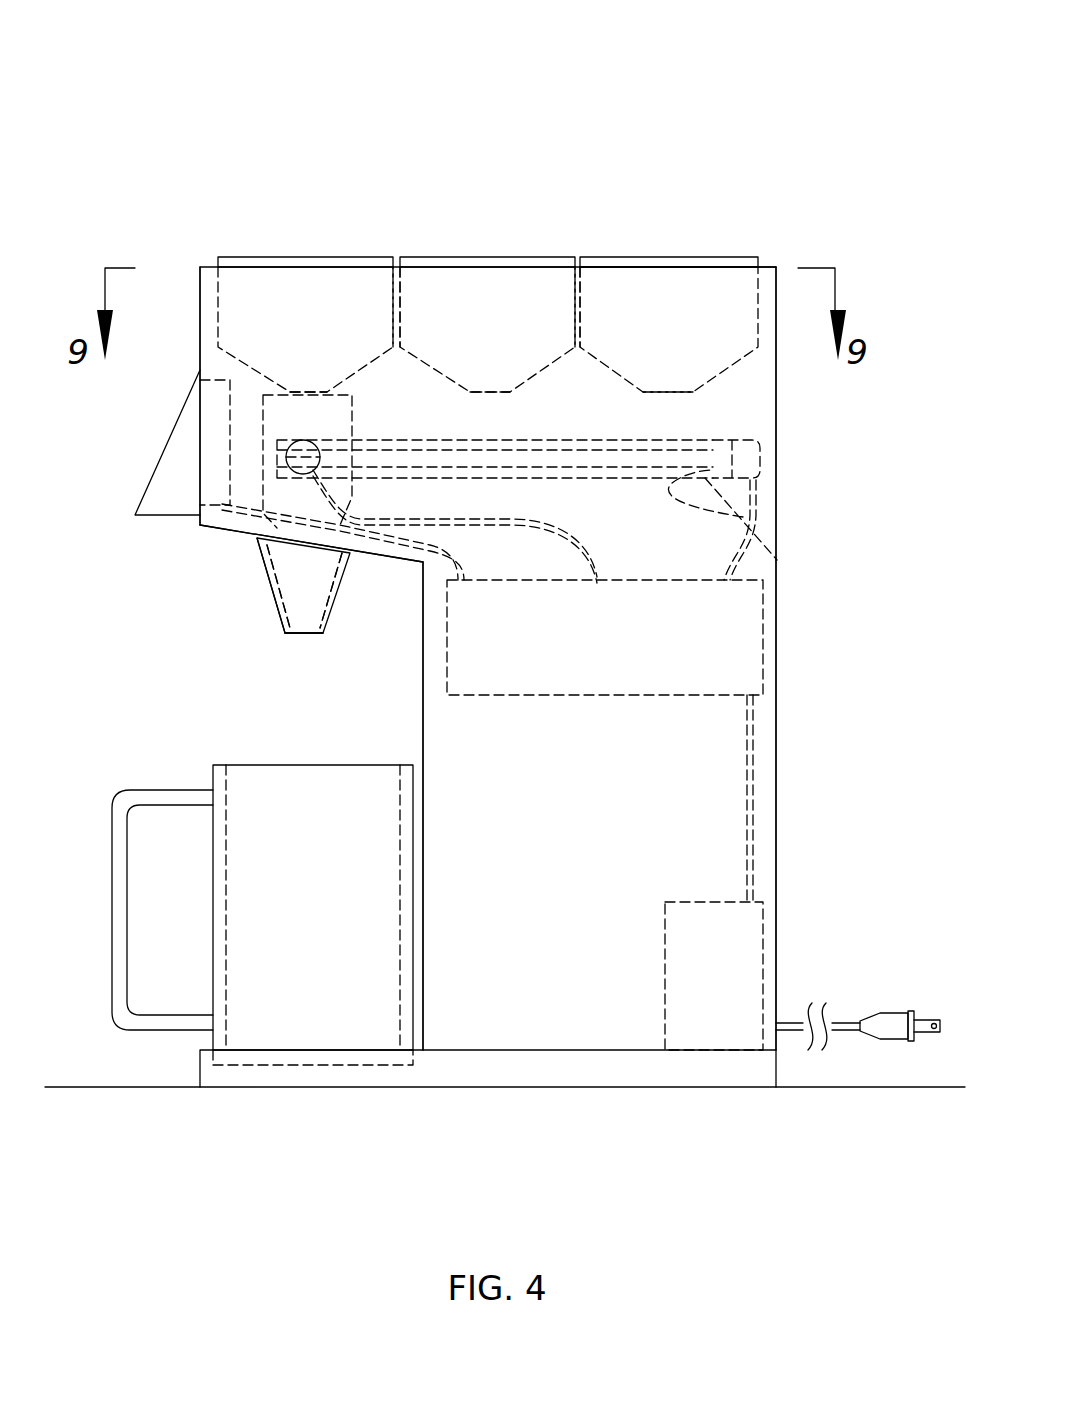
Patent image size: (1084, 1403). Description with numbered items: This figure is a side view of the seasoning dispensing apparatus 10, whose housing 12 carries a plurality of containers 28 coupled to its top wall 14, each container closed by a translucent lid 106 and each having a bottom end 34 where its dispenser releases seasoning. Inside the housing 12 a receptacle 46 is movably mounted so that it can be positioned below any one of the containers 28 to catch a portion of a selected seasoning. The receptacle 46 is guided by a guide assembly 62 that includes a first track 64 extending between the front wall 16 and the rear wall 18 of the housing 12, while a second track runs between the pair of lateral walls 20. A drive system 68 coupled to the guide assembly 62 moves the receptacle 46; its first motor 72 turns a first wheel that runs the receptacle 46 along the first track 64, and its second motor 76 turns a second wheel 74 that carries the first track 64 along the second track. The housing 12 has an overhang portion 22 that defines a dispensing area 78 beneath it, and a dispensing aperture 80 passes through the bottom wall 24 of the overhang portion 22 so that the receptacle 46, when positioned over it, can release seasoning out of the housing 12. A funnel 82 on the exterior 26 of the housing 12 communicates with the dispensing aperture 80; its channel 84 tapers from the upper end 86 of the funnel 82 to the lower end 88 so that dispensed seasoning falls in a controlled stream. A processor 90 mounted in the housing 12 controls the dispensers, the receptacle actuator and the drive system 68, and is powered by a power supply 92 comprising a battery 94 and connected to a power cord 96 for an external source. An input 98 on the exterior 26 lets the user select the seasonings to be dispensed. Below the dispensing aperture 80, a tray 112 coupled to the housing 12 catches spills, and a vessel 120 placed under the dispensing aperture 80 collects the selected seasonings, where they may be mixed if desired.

The seasoning dispensing apparatus 10 is at (812, 100).
The housing 12 is at (845, 250).
The top wall 14 is at (768, 267).
The front wall 16 is at (198, 280).
The rear wall 18 is at (776, 575).
The lateral walls 20 is at (650, 790).
The overhang portion 22 is at (215, 522).
The bottom wall 24 is at (393, 553).
The exterior 26 is at (563, 1002).
The containers 28 is at (710, 283).
The bottom end 34 is at (670, 392).
The receptacle 46 is at (417, 392).
The guide assembly 62 is at (745, 425).
The first track 64 is at (590, 440).
The drive system 68 is at (285, 398).
The first motor 72 is at (277, 458).
The second wheel 74 is at (743, 517).
The second motor 76 is at (747, 458).
The dispensing area 78 is at (205, 730).
The dispensing aperture 80 is at (273, 593).
The funnel 82 is at (282, 582).
The channel 84 is at (310, 583).
The upper end 86 is at (300, 553).
The lower end 88 is at (307, 633).
The processor 90 is at (647, 663).
The power supply 92 is at (790, 935).
The battery 94 is at (712, 983).
The power cord 96 is at (847, 1030).
The input 98 is at (172, 490).
The lids 106 is at (730, 257).
The tray 112 is at (222, 1075).
The vessel 120 is at (257, 967).